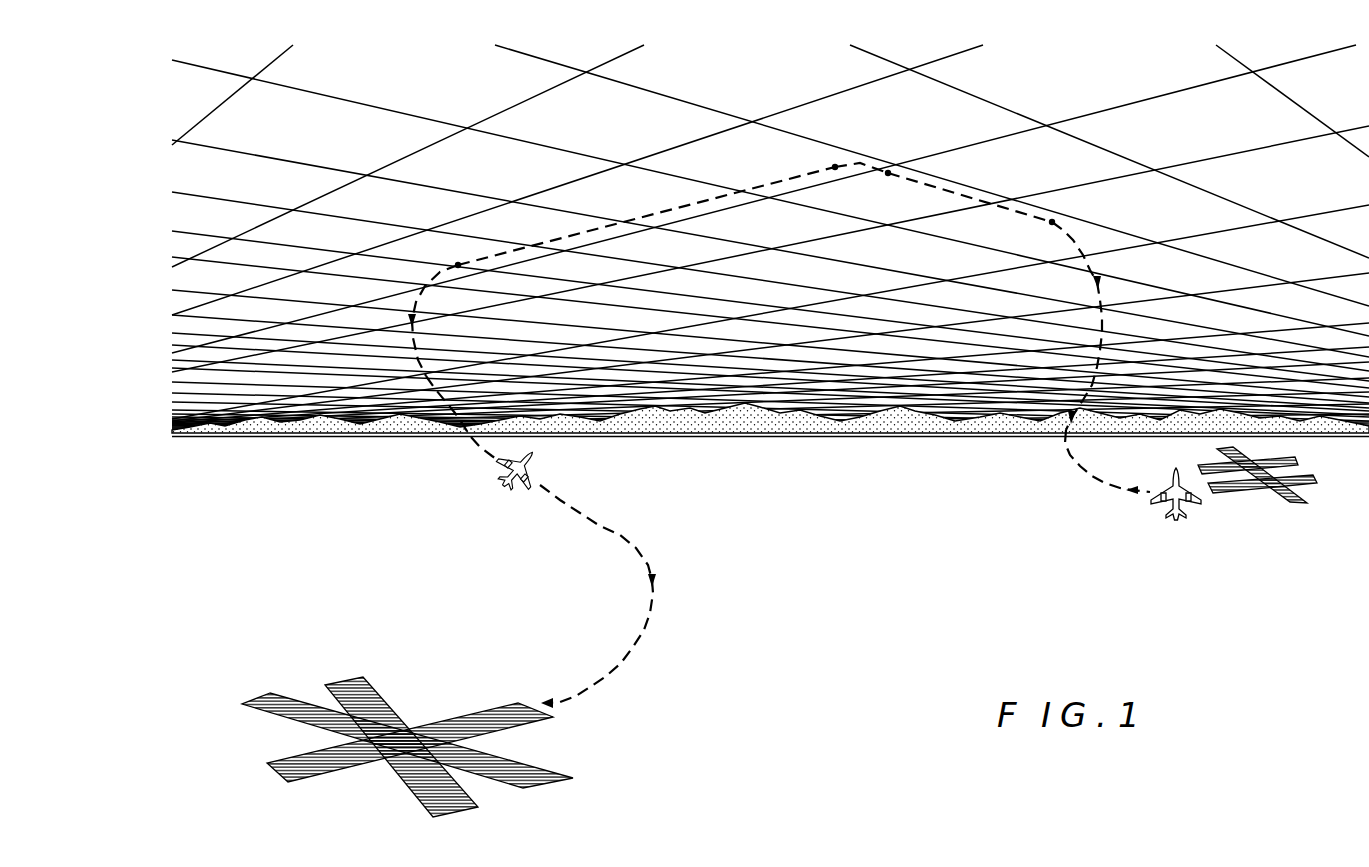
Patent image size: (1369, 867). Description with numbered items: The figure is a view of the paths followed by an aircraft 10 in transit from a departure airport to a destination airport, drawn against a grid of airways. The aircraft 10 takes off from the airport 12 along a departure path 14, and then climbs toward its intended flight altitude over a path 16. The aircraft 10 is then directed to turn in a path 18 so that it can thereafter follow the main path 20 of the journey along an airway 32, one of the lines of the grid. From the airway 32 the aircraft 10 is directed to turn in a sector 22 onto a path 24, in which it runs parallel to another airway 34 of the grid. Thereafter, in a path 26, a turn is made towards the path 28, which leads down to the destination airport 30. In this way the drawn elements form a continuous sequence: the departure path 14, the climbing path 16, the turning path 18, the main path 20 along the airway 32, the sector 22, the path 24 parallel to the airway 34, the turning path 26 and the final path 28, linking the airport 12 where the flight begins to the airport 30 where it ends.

The aircraft 10 is at (520, 486).
The airport 12 is at (427, 712).
The departure path 14 is at (620, 535).
The path 16 is at (456, 412).
The path 18 is at (417, 297).
The main path 20 is at (646, 214).
The sector 22 is at (858, 163).
The path 24 is at (963, 193).
The path 26 is at (1077, 243).
The path 28 is at (1093, 478).
The airport 30 is at (1306, 470).
The airway 32 is at (1138, 101).
The airway 34 is at (1226, 263).